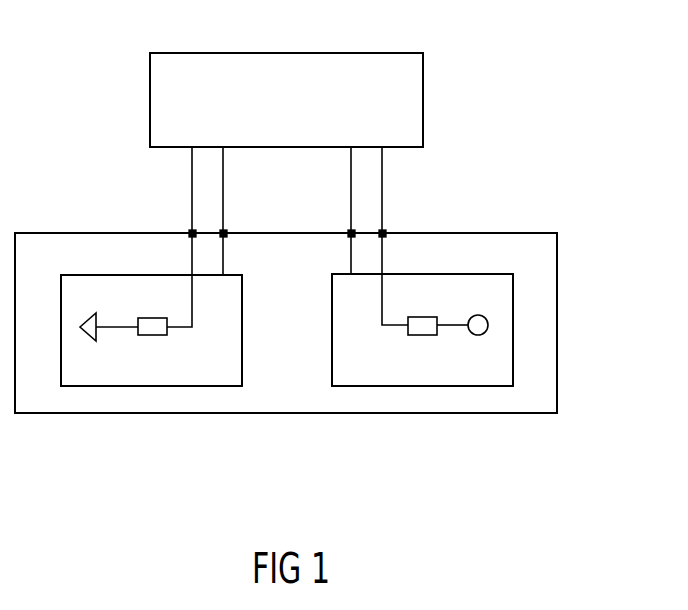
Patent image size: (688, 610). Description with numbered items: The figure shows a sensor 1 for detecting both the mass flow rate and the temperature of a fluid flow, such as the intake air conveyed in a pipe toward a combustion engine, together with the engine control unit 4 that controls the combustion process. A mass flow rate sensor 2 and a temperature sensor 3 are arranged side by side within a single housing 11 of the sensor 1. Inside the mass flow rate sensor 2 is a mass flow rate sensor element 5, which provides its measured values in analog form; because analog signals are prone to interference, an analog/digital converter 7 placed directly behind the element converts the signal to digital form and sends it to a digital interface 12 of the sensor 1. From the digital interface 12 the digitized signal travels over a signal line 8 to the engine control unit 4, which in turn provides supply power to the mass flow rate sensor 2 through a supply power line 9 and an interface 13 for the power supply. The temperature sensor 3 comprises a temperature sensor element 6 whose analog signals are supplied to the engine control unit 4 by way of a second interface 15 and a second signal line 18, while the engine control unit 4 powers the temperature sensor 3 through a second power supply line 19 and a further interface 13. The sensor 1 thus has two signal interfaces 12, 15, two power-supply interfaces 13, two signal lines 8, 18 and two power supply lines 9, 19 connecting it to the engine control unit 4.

The sensor 1 is at (527, 238).
The mass flow rate sensor 2 is at (70, 375).
The temperature sensor 3 is at (362, 378).
The engine control unit 4 is at (420, 68).
The mass flow rate sensor element 5 is at (92, 338).
The temperature sensor element 6 is at (475, 336).
The analog/digital converter 7 is at (152, 318).
The signal line 8 is at (192, 188).
The supply power line 9 is at (223, 210).
The housing 11 is at (557, 293).
The digital interface 12 is at (189, 231).
The interface for the power supply 13 is at (226, 236).
The second interface 15 is at (385, 231).
The second signal line 18 is at (383, 188).
The second power supply line 19 is at (351, 192).